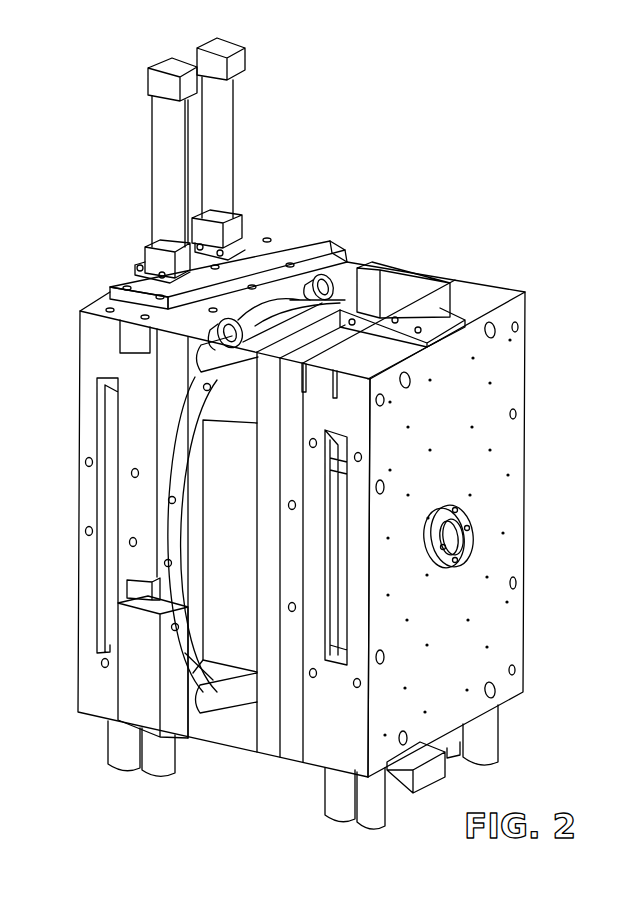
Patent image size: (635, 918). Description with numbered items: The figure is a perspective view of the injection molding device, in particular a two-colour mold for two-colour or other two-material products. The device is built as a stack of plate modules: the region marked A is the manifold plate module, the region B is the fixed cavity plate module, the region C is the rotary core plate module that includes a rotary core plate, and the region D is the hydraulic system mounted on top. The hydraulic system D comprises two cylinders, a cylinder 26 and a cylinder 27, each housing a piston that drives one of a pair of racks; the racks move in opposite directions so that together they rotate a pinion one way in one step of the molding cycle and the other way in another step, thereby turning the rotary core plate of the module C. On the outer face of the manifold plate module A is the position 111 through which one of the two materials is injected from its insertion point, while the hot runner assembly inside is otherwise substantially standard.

The manifold plate module A is at (490, 483).
The fixed cavity plate module B is at (268, 740).
The rotary core plate module C is at (300, 318).
The hydraulic system D is at (302, 234).
The cylinder 26 is at (165, 160).
The cylinder 27 is at (213, 123).
The position 111 is at (457, 563).